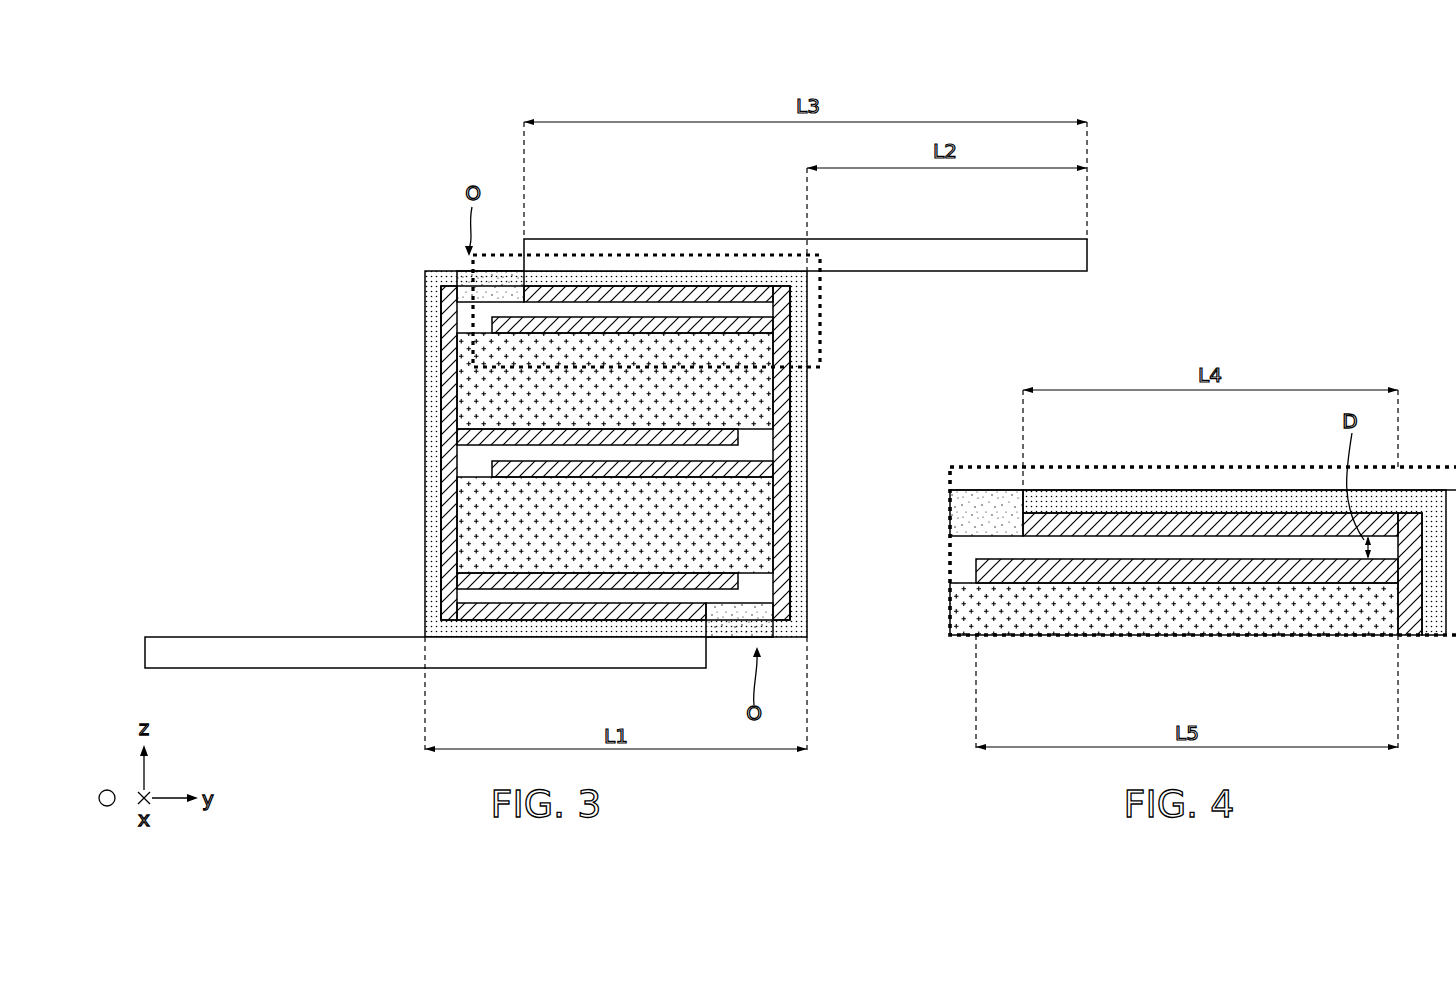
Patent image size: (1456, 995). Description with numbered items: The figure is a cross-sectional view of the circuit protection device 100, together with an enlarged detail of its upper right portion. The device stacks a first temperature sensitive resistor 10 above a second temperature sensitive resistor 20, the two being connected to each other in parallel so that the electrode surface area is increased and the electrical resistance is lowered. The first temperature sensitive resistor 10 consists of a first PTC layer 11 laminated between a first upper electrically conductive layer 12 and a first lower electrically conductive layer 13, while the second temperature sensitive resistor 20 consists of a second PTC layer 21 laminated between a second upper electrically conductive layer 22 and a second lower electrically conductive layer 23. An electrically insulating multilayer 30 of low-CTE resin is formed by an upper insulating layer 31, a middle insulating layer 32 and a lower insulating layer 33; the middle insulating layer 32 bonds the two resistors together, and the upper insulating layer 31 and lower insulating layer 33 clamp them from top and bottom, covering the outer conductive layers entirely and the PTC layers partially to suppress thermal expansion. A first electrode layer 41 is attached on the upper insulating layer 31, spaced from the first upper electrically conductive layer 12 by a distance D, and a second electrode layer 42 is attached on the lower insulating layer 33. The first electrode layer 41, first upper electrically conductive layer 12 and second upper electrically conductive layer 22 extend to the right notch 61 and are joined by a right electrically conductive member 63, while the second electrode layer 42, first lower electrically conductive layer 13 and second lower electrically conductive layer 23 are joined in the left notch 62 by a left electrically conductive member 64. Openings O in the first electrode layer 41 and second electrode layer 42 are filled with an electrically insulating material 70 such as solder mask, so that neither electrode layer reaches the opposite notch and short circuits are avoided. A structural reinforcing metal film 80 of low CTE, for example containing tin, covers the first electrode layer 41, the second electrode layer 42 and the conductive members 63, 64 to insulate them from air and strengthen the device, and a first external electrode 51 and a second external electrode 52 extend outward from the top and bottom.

In FIG. 3, the circuit protection device 100 is at (179, 98).
In FIG. 3, the first temperature sensitive resistor 10 is at (682, 380).
In FIG. 3, the first PTC layer 11 is at (766, 378).
In FIG. 4, the first PTC layer 11 is at (1172, 630).
In FIG. 3, the first upper electrically conductive layer 12 is at (776, 325).
In FIG. 4, the first upper electrically conductive layer 12 is at (1115, 570).
In FIG. 3, the first lower electrically conductive layer 13 is at (661, 437).
In FIG. 3, the second temperature sensitive resistor 20 is at (549, 526).
In FIG. 3, the second PTC layer 21 is at (470, 522).
In FIG. 3, the second upper electrically conductive layer 22 is at (488, 468).
In FIG. 3, the second lower electrically conductive layer 23 is at (552, 583).
In FIG. 3, the electrically insulating multilayer 30 is at (615, 374).
In FIG. 3, the upper insulating layer 31 is at (566, 312).
In FIG. 4, the upper insulating layer 31 is at (1178, 546).
In FIG. 3, the middle insulating layer 32 is at (612, 455).
In FIG. 3, the lower insulating layer 33 is at (659, 597).
In FIG. 3, the first electrode layer 41 is at (703, 292).
In FIG. 4, the first electrode layer 41 is at (1062, 522).
In FIG. 3, the second electrode layer 42 is at (521, 622).
In FIG. 3, the first external electrode 51 is at (1089, 260).
In FIG. 4, the first external electrode 51 is at (1272, 478).
In FIG. 3, the second external electrode 52 is at (185, 657).
In FIG. 3, the right notch 61 is at (836, 504).
In FIG. 3, the left notch 62 is at (394, 446).
In FIG. 3, the right electrically conductive member 63 is at (782, 522).
In FIG. 4, the right electrically conductive member 63 is at (1412, 530).
In FIG. 3, the left electrically conductive member 64 is at (449, 622).
In FIG. 3, the electrically insulating material 70 is at (510, 285).
In FIG. 4, the electrically insulating material 70 is at (990, 500).
In FIG. 3, the structural reinforcing metal film 80 is at (800, 590).
In FIG. 4, the structural reinforcing metal film 80 is at (1226, 498).